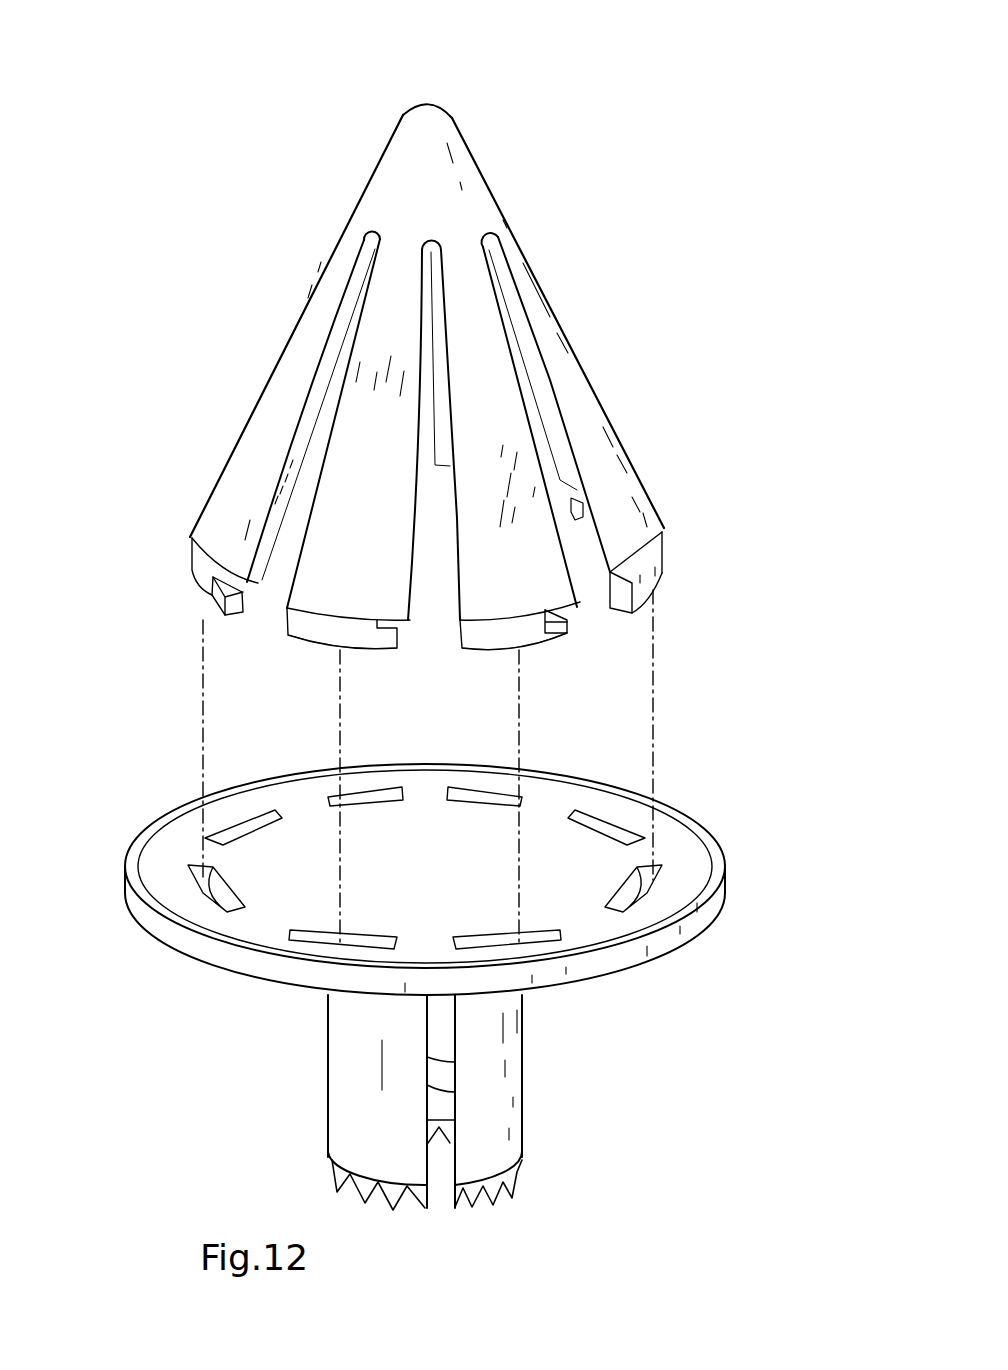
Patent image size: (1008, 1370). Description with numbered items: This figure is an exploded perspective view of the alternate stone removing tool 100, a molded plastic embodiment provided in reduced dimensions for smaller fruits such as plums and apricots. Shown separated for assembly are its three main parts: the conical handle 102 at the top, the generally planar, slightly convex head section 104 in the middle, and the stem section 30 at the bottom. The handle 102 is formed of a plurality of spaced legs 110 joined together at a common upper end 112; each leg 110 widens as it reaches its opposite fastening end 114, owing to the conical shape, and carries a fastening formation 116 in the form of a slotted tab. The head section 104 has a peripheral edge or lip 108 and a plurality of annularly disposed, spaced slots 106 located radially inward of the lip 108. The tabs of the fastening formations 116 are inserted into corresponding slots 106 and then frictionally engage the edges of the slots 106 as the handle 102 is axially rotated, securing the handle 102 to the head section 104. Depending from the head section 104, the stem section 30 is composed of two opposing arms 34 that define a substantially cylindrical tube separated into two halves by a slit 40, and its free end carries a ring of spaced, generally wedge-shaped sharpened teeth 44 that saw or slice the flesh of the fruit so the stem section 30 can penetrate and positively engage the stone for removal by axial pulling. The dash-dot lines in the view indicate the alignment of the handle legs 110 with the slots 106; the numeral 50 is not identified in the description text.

The stone removing tool 100 is at (745, 165).
The handle 102 is at (355, 198).
The head section 104 is at (693, 858).
The slots 106 is at (610, 815).
The lip 108 is at (700, 927).
The legs 110 is at (478, 328).
The upper end 112 is at (418, 133).
The fastening end 114 is at (198, 542).
The fastening formation 116 is at (303, 627).
The stem section 30 is at (527, 1031).
The arms 34 is at (343, 1085).
The slit 40 is at (450, 1153).
The teeth 44 is at (395, 1205).
The internal ridge 50 is at (440, 1070).